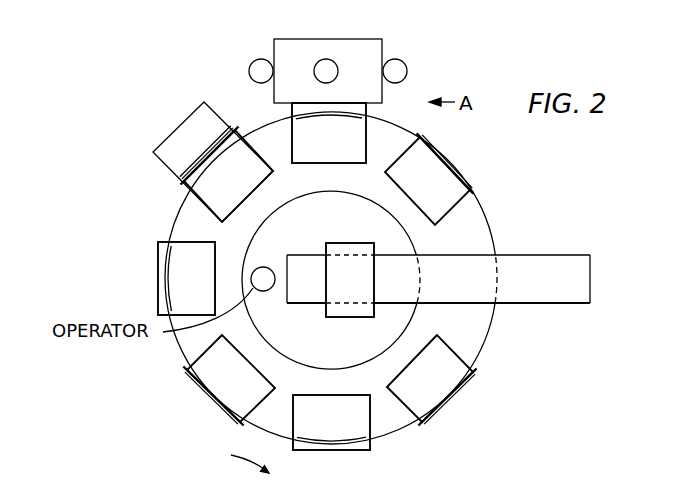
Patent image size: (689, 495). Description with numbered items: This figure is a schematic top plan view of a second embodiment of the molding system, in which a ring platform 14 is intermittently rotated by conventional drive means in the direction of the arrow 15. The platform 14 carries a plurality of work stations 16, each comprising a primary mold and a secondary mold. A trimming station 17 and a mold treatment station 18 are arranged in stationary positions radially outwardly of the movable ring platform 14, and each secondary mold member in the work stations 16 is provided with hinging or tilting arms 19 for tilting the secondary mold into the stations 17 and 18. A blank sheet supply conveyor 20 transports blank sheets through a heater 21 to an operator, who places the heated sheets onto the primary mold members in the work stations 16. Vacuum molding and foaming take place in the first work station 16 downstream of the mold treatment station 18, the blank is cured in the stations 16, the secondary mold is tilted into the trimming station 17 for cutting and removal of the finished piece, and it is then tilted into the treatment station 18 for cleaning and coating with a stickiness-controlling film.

The ring platform 14 is at (178, 222).
The arrow 15 is at (232, 458).
The work stations 16 is at (343, 145).
The trimming station 17 is at (381, 50).
The mold treatment station 18 is at (182, 130).
The hinging or tilting arms 19 is at (421, 137).
The blank sheet supply conveyor 20 is at (527, 296).
The heater 21 is at (364, 292).